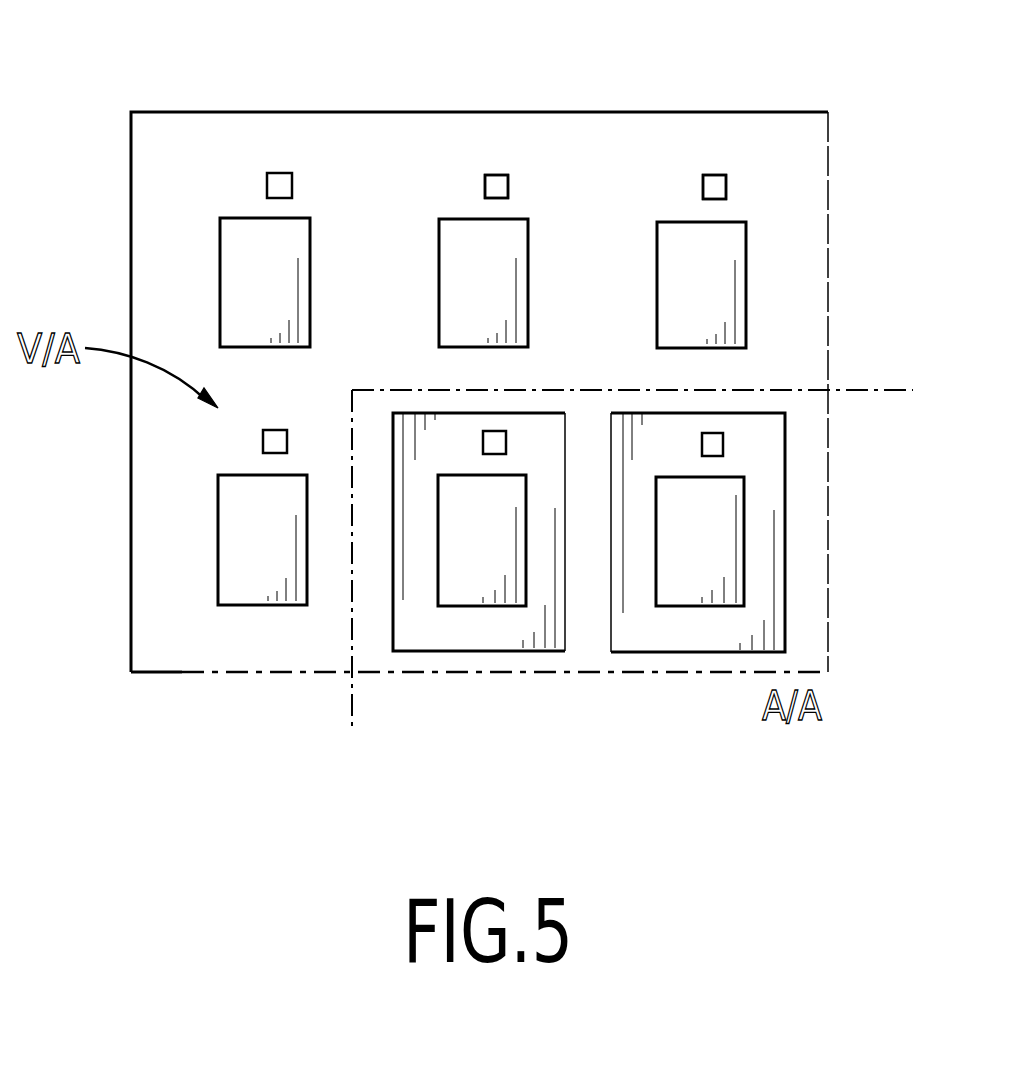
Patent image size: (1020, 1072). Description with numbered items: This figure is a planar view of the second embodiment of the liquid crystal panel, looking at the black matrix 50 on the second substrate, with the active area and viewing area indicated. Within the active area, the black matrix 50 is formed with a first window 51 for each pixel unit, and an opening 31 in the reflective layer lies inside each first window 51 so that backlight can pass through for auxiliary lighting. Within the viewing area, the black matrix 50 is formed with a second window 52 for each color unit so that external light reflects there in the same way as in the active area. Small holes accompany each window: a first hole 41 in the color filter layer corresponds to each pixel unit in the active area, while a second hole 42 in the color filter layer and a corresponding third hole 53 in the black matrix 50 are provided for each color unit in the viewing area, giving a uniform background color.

The black matrix 50 is at (350, 150).
The first window 51 is at (785, 491).
The second window 52 is at (746, 320).
The third hole 53 is at (508, 183).
The second hole 42 is at (490, 180).
The first hole 41 is at (723, 441).
The opening 31 is at (744, 578).